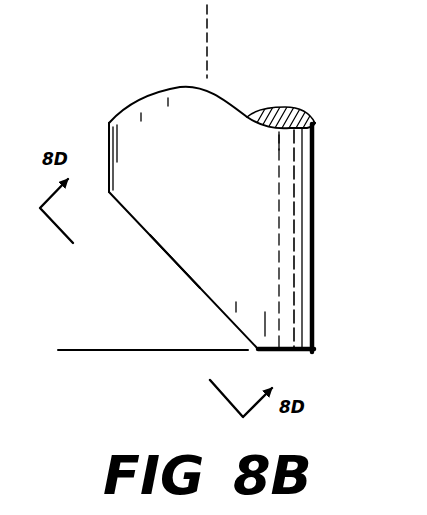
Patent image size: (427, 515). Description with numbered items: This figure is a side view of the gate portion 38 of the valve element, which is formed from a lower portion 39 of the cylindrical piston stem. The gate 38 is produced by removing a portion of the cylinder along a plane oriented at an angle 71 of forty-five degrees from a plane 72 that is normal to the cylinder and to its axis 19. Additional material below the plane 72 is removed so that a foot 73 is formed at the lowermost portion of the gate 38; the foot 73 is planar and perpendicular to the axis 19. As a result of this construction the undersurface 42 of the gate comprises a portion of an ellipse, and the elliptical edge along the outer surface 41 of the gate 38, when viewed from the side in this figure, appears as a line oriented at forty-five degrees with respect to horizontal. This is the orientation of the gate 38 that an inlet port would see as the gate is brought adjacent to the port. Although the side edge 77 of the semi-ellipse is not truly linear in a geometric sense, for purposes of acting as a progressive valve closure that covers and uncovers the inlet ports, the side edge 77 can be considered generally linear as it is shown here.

The axis 19 is at (209, 14).
The gate portion 38 is at (214, 170).
The lower portion 39 is at (330, 222).
The outer surface 41 is at (125, 168).
The undersurface 42 is at (134, 229).
The angle 71 is at (155, 251).
The plane 72 is at (145, 353).
The foot 73 is at (290, 353).
The side edge 77 is at (182, 264).